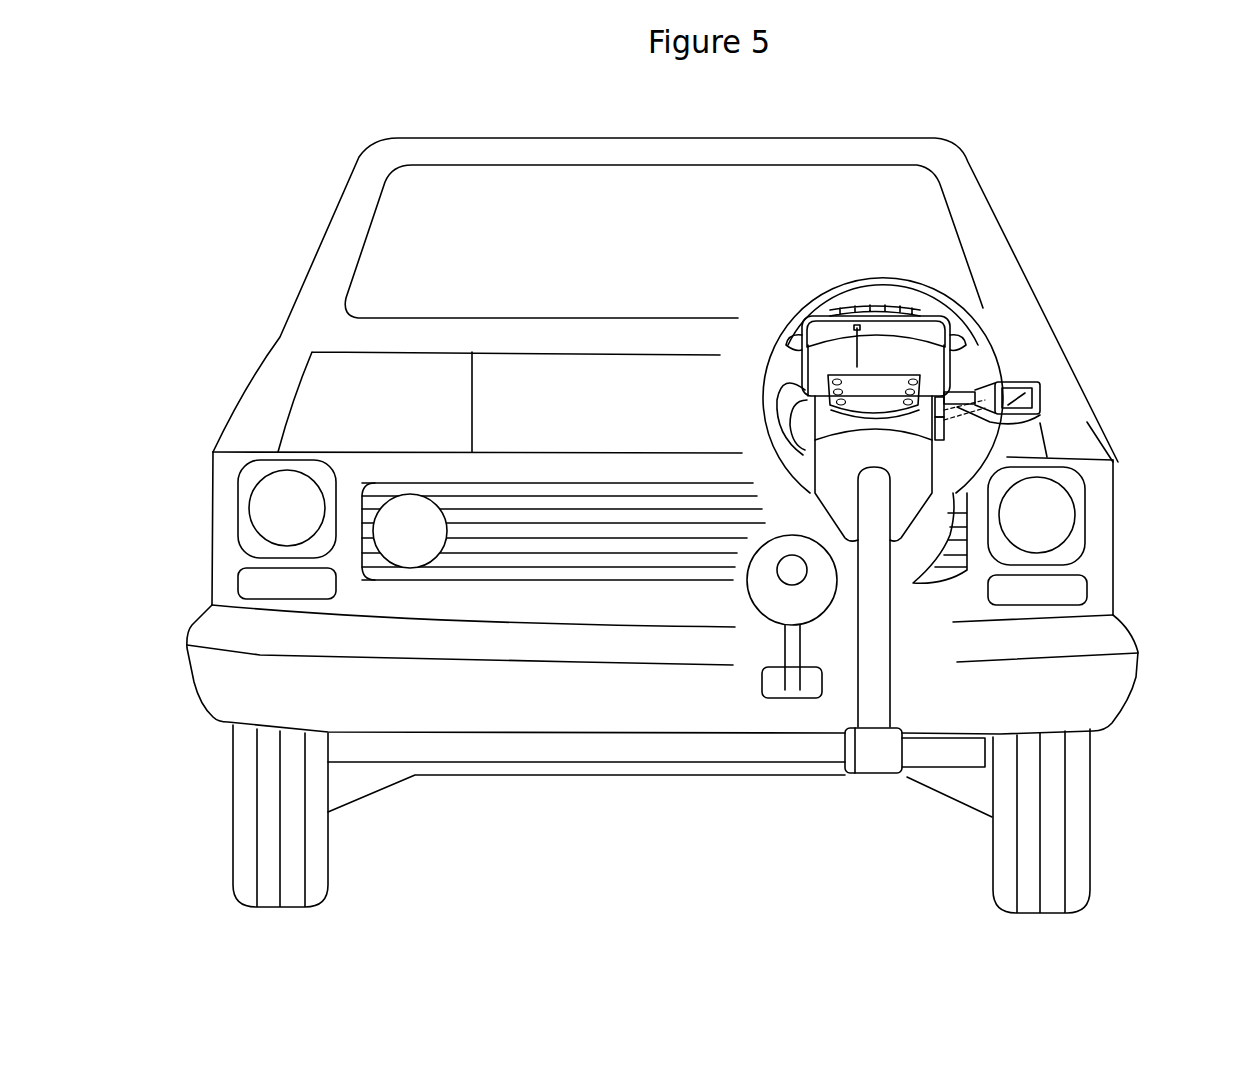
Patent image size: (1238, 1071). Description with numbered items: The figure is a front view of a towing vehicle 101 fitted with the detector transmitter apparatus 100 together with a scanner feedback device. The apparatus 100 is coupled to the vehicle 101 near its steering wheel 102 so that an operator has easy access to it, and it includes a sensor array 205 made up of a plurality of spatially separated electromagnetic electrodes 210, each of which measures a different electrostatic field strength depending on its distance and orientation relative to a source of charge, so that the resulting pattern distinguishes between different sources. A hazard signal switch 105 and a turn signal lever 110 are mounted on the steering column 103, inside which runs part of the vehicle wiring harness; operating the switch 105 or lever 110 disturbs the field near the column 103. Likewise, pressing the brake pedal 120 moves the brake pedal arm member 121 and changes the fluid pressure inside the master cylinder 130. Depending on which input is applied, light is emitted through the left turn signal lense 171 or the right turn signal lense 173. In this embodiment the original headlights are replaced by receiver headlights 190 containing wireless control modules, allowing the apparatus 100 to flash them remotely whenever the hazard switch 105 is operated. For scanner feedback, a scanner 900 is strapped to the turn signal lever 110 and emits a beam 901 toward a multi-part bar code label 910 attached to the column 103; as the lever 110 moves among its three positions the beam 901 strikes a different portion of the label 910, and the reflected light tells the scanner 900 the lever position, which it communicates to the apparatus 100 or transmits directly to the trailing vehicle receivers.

The detector transmitter apparatus 100 is at (893, 325).
The towing vehicle 101 is at (373, 343).
The steering wheel 102 is at (863, 283).
The steering column 103 is at (842, 462).
The hazard signal switch 105 is at (1087, 422).
The turn signal lever 110 is at (985, 392).
The brake pedal 120 is at (777, 690).
The brake pedal arm member 121 is at (793, 645).
The master cylinder 130 is at (782, 595).
The left turn signal lense 171 is at (1053, 592).
The right turn signal lense 173 is at (280, 585).
The receiver headlights 190 is at (287, 508).
The sensor array 205 is at (865, 388).
The electrodes 210 is at (800, 357).
The scanner 900 is at (1030, 383).
The beam 901 is at (1040, 417).
The bar code label 910 is at (957, 423).